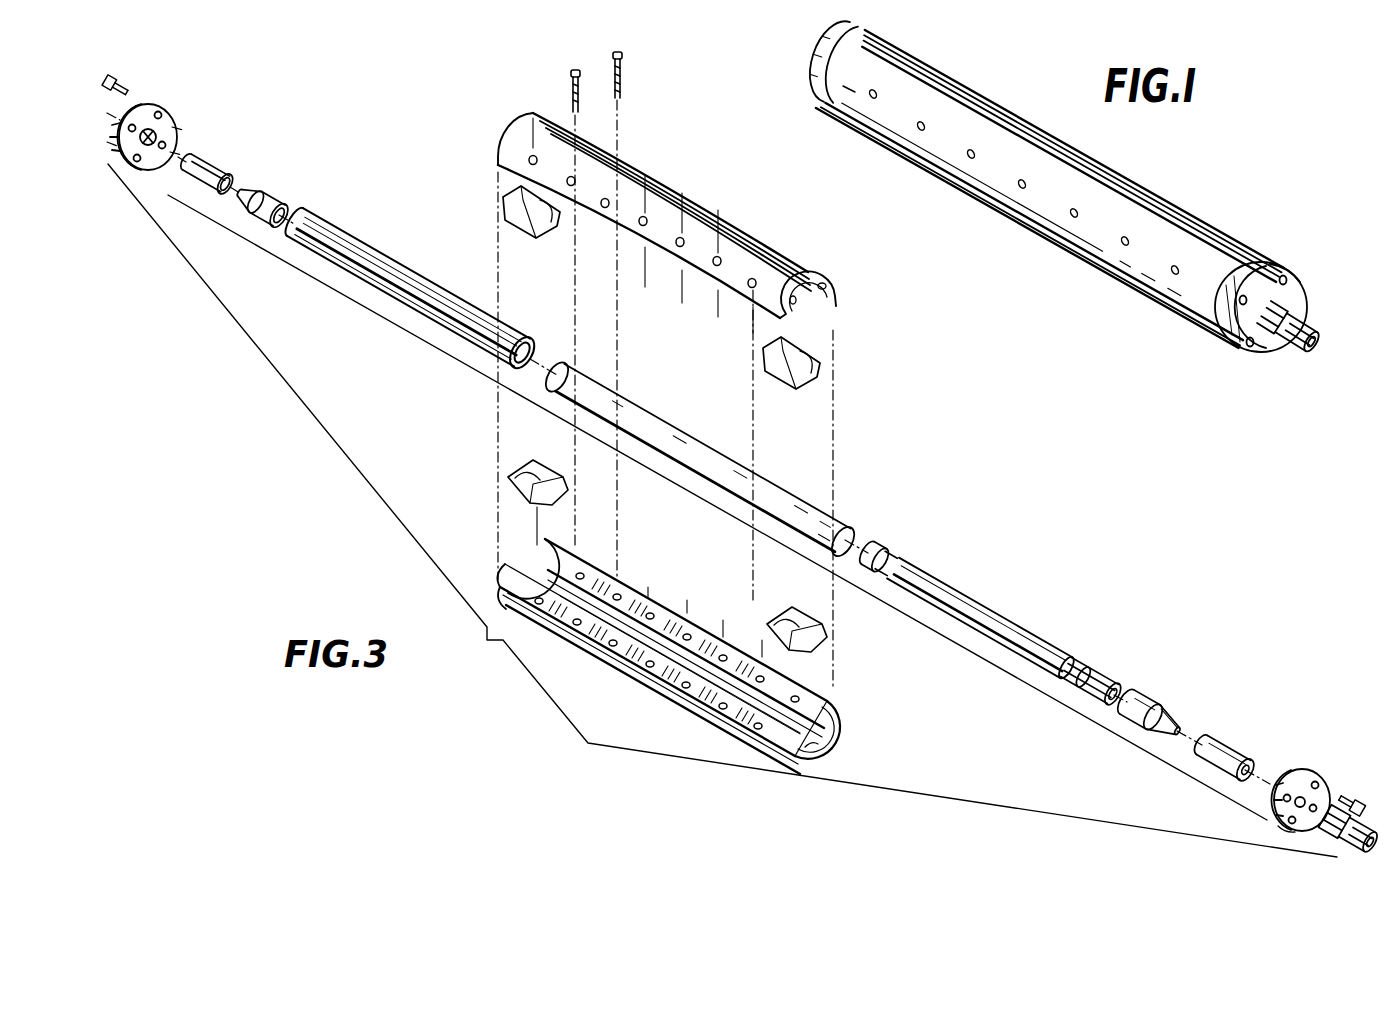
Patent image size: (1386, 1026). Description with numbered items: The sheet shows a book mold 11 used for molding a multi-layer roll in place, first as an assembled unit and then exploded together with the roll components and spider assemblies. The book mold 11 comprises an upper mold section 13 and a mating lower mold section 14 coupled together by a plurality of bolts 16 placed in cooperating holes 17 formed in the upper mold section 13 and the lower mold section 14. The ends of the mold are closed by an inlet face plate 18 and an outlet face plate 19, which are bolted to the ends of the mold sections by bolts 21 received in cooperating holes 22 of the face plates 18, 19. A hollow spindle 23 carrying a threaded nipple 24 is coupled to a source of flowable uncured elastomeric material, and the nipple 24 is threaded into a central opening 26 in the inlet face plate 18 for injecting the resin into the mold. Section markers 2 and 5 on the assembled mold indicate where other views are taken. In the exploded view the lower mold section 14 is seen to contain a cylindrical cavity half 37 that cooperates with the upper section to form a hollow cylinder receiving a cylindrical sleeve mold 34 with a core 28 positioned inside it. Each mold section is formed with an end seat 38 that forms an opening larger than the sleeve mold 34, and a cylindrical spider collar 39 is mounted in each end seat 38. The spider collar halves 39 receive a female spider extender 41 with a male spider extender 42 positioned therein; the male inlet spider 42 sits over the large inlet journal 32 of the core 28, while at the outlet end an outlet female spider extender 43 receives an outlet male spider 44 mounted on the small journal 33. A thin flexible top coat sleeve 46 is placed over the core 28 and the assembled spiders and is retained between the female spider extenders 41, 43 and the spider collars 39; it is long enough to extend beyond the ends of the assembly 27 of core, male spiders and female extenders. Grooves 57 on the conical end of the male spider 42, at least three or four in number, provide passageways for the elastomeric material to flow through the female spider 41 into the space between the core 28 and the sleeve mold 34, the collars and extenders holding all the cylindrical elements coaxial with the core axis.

In FIG. 1, the book mold 11 is at (1008, 91).
In FIG. 1, the upper mold section 13 is at (1114, 184).
In FIG. 3, the upper mold section 13 is at (770, 270).
In FIG. 1, the lower mold section 14 is at (989, 206).
In FIG. 3, the lower mold section 14 is at (672, 677).
In FIG. 3, the bolts 16 is at (630, 78).
In FIG. 1, the holes 17 is at (874, 98).
In FIG. 3, the holes 17 is at (574, 188).
In FIG. 1, the inlet face plate 18 is at (1306, 290).
In FIG. 3, the inlet face plate 18 is at (1305, 773).
In FIG. 1, the outlet face plate 19 is at (832, 43).
In FIG. 3, the outlet face plate 19 is at (156, 103).
In FIG. 3, the bolts 21 is at (128, 82).
In FIG. 3, the holes 22 is at (177, 112).
In FIG. 1, the hollow spindle 23 is at (1265, 350).
In FIG. 3, the hollow spindle 23 is at (1340, 842).
In FIG. 3, the threaded nipple 24 is at (1252, 822).
In FIG. 3, the central opening 26 is at (1287, 767).
In FIG. 1, the assembly 27 is at (1285, 265).
In FIG. 3, the assembly 27 is at (690, 486).
In FIG. 3, the core 28 is at (983, 610).
In FIG. 3, the large journal 32 is at (1103, 673).
In FIG. 3, the small journal 33 is at (876, 545).
In FIG. 3, the sleeve mold 34 is at (385, 270).
In FIG. 3, the cylindrical cavity half 37 is at (748, 730).
In FIG. 3, the end seat 38 is at (812, 295).
In FIG. 3, the cylindrical spider collar 39 is at (822, 362).
In FIG. 3, the female spider extender 41 is at (1223, 747).
In FIG. 3, the male spider extender 42 is at (1152, 697).
In FIG. 3, the outlet female spider extender 43 is at (205, 160).
In FIG. 3, the outlet male spider 44 is at (263, 187).
In FIG. 3, the flexible sleeve 46 is at (797, 500).
In FIG. 3, the grooves 57 is at (1172, 713).
In FIG. 1, the section line 2- 2 is at (1223, 218).
In FIG. 1, the section line 5- 5 is at (1193, 285).